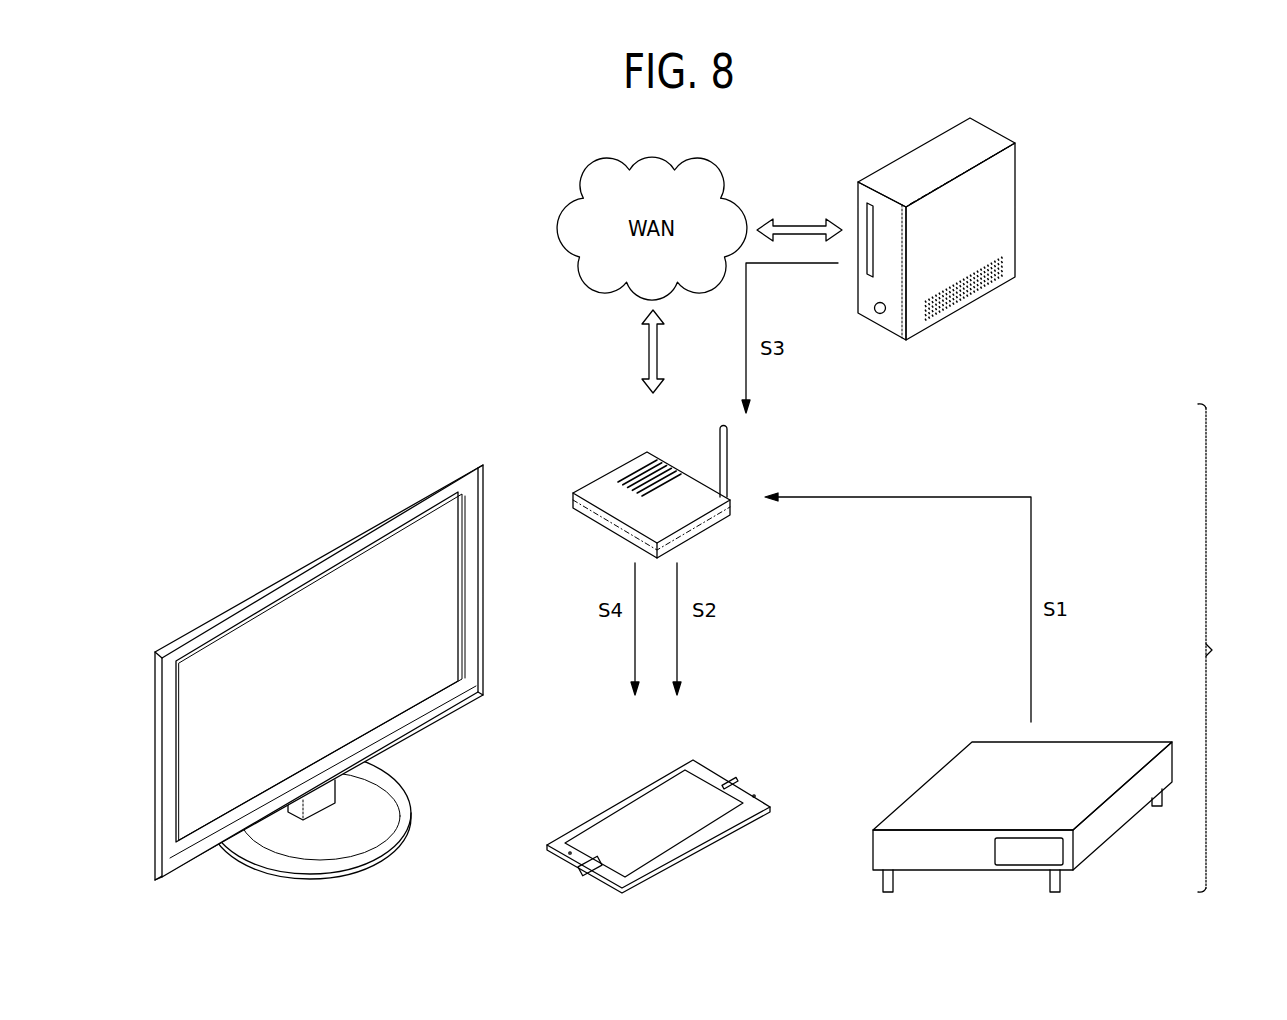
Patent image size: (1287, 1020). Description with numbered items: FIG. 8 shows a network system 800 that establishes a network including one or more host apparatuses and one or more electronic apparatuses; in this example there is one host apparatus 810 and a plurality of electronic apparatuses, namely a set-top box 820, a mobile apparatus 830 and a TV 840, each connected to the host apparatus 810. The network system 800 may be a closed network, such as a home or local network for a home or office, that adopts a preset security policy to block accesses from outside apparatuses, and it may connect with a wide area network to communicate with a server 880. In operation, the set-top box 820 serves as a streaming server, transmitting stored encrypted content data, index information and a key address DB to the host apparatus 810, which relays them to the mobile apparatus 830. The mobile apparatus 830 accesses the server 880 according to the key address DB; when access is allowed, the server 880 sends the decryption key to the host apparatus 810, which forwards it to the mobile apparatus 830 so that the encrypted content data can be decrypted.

The network system 800 is at (1226, 648).
The host apparatus 810 is at (603, 455).
The set-top box 820 is at (912, 781).
The mobile apparatus 830 is at (610, 781).
The TV 840 is at (283, 565).
The server 880 is at (1030, 235).